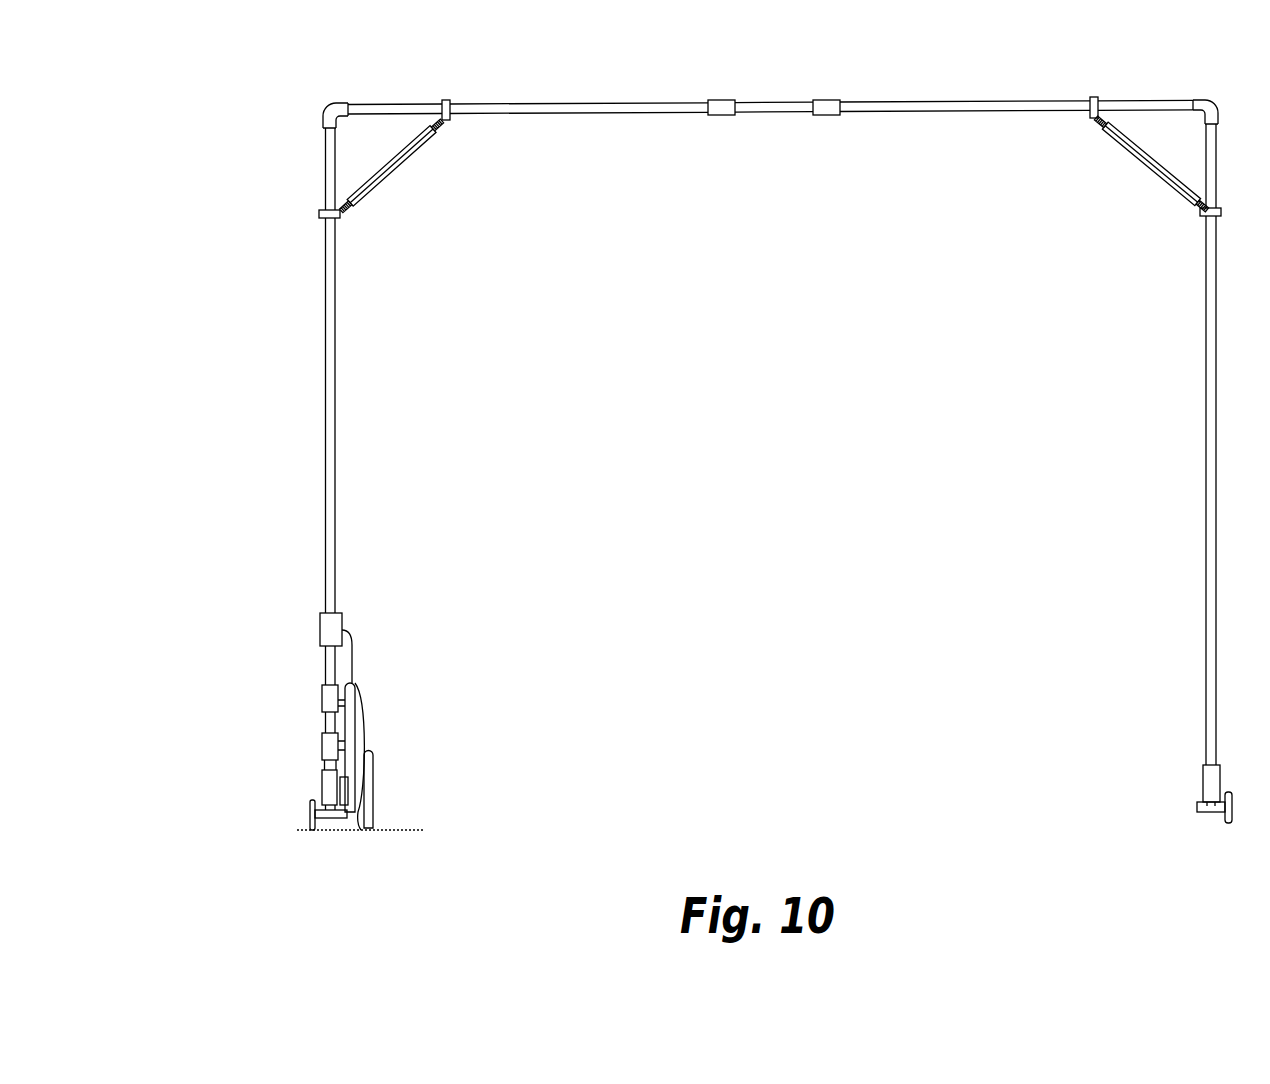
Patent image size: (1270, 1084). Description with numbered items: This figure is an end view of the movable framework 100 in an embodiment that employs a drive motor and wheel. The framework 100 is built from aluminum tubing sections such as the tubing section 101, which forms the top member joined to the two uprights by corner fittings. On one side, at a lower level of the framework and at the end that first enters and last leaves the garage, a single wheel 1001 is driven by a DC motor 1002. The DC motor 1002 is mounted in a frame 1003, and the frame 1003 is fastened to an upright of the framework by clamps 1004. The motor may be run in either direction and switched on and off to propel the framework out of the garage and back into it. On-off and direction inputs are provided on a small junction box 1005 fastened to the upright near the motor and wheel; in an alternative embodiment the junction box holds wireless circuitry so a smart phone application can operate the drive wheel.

The movable framework 100 is at (325, 577).
The tubing section 101 is at (612, 103).
The wheel 1001 is at (374, 766).
The DC motor 1002 is at (361, 830).
The frame 1003 is at (356, 684).
The clamps 1004 is at (322, 746).
The junction box 1005 is at (343, 622).